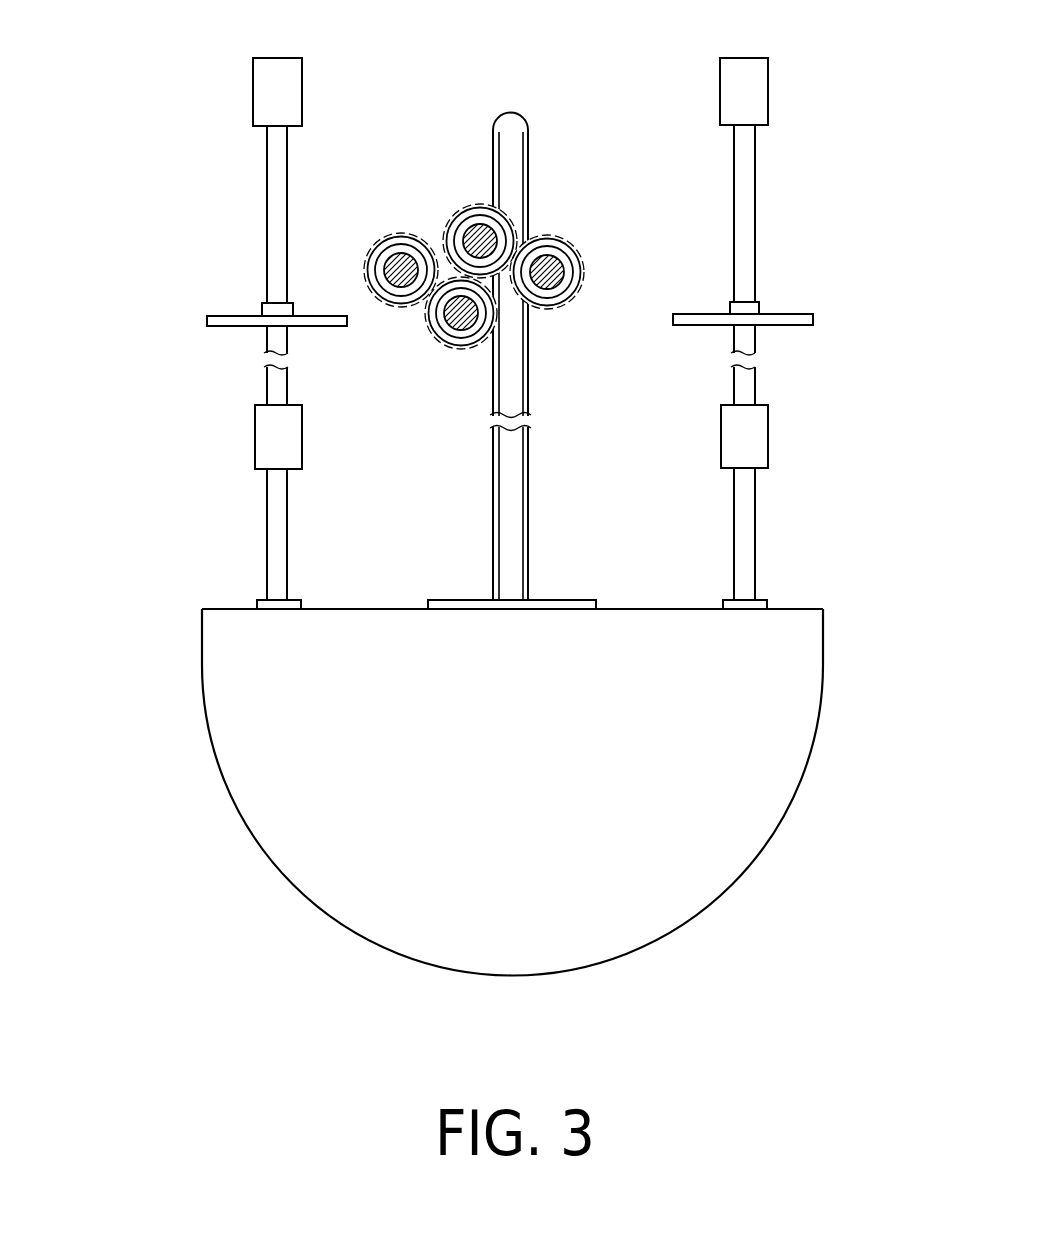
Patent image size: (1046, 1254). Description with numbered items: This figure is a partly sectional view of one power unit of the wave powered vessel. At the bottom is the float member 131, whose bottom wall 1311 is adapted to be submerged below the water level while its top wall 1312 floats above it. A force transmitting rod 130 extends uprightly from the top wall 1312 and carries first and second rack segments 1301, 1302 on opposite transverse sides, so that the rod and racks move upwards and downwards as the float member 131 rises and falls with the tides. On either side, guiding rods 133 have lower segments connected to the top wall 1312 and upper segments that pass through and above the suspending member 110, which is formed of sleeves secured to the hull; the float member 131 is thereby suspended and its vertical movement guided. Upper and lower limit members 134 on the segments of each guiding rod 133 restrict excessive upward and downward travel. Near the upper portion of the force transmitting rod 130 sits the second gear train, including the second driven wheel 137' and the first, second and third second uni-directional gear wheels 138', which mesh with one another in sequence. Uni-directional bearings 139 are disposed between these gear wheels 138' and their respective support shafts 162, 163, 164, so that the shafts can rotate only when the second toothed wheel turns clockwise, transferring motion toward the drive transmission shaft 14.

The suspending member 110 is at (215, 327).
The force transmitting rod 130 is at (539, 309).
The first rack segment 1301 is at (493, 153).
The second rack segment 1302 is at (530, 158).
The float member 131 is at (568, 744).
The bottom wall 1311 is at (700, 913).
The top wall 1312 is at (800, 608).
The guiding rod 133 is at (272, 202).
The limit member 134 is at (268, 103).
The second driven wheel 137' is at (371, 239).
The second uni-directional gear wheel 138' is at (543, 277).
The uni-directional bearing 139 is at (500, 216).
The drive transmission shaft 14 is at (397, 285).
The support shaft 162 is at (560, 280).
The support shaft 163 is at (473, 247).
The support shaft 164 is at (445, 335).